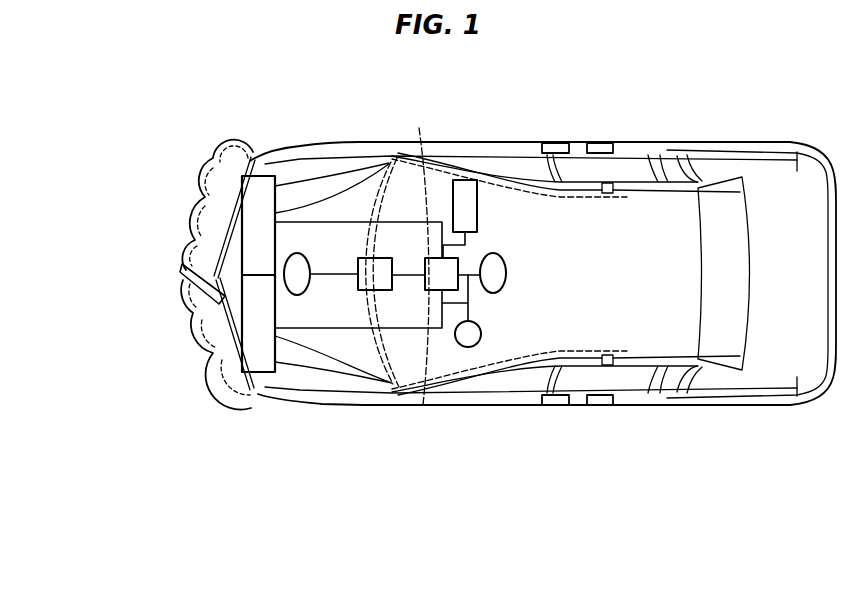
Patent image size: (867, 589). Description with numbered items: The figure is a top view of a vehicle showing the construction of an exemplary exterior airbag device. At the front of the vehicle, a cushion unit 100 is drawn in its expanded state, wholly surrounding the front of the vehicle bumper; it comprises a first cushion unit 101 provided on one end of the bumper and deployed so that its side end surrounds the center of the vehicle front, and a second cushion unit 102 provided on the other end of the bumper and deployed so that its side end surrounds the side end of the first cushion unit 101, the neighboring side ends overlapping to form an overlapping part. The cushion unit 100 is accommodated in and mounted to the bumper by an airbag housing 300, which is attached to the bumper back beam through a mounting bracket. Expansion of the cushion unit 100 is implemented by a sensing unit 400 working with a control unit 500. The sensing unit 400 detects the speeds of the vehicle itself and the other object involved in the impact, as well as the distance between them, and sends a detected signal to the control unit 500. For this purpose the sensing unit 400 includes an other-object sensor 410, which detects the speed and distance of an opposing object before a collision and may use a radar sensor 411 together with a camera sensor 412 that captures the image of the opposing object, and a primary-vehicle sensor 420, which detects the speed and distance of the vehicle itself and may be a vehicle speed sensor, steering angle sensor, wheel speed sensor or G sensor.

The cushion unit 100 is at (140, 275).
The first cushion unit 101 is at (190, 228).
The second cushion unit 102 is at (170, 344).
The airbag housing 300 is at (262, 194).
The sensing unit 400 is at (444, 321).
The other-object sensor 410 is at (395, 383).
The radar sensor 411 is at (298, 296).
The camera sensor 412 is at (494, 294).
The primary-vehicle sensor 420 is at (577, 316).
The control unit 500 is at (432, 258).